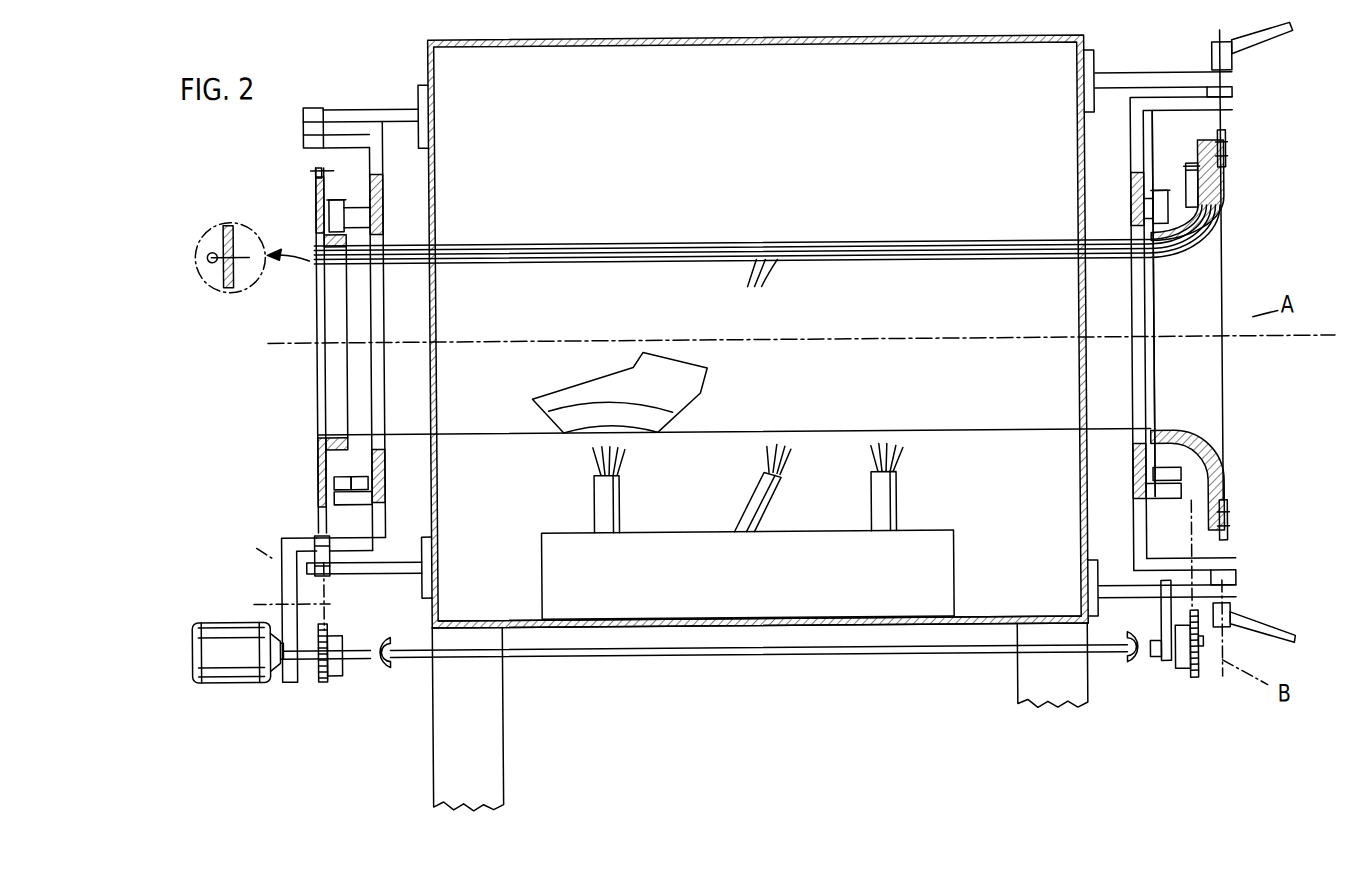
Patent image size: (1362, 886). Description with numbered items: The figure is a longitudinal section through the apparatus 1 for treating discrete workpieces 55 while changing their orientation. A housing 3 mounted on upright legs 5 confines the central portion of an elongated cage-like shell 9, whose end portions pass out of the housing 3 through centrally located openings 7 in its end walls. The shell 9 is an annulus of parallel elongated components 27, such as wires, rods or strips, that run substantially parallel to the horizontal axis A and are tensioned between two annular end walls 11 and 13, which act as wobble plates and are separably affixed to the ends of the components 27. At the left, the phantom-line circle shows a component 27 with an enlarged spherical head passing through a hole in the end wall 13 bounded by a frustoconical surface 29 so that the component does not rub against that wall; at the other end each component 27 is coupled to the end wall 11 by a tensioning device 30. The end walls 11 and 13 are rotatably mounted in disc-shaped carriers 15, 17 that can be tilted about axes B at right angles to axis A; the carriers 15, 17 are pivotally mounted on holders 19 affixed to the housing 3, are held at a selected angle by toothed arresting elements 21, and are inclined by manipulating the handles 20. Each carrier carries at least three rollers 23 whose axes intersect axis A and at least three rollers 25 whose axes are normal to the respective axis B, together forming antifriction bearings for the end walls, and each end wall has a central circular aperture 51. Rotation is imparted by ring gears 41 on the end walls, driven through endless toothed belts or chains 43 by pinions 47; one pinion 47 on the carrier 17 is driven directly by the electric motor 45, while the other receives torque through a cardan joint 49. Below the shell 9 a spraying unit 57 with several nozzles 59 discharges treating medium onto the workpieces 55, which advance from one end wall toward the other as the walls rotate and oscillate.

The apparatus 1 is at (764, 123).
The housing 3 is at (675, 622).
The legs 5 is at (468, 728).
The openings 7 is at (437, 402).
The shell 9 is at (670, 250).
The end wall 11 is at (1203, 437).
The end wall 13 is at (336, 349).
The carrier 15 is at (1234, 564).
The carrier 17 is at (378, 525).
The holders 19 is at (360, 107).
The handles 20 is at (1234, 621).
The arresting elements 21 is at (1234, 92).
The rollers 23 is at (318, 474).
The rollers 25 is at (333, 212).
The elongated components 27 is at (754, 288).
The frustoconical surfaces 29 is at (248, 268).
The tensioning device 30 is at (1237, 157).
The ring gears 41 is at (317, 171).
The toothed belts or chains 43 is at (280, 608).
The electric motor 45 is at (239, 669).
The pinions 47 is at (316, 679).
The cardan joint 49 is at (742, 650).
The aperture 51 is at (1154, 294).
The workpieces 55 is at (593, 375).
The spraying unit 57 is at (617, 597).
The nozzles 59 is at (603, 501).